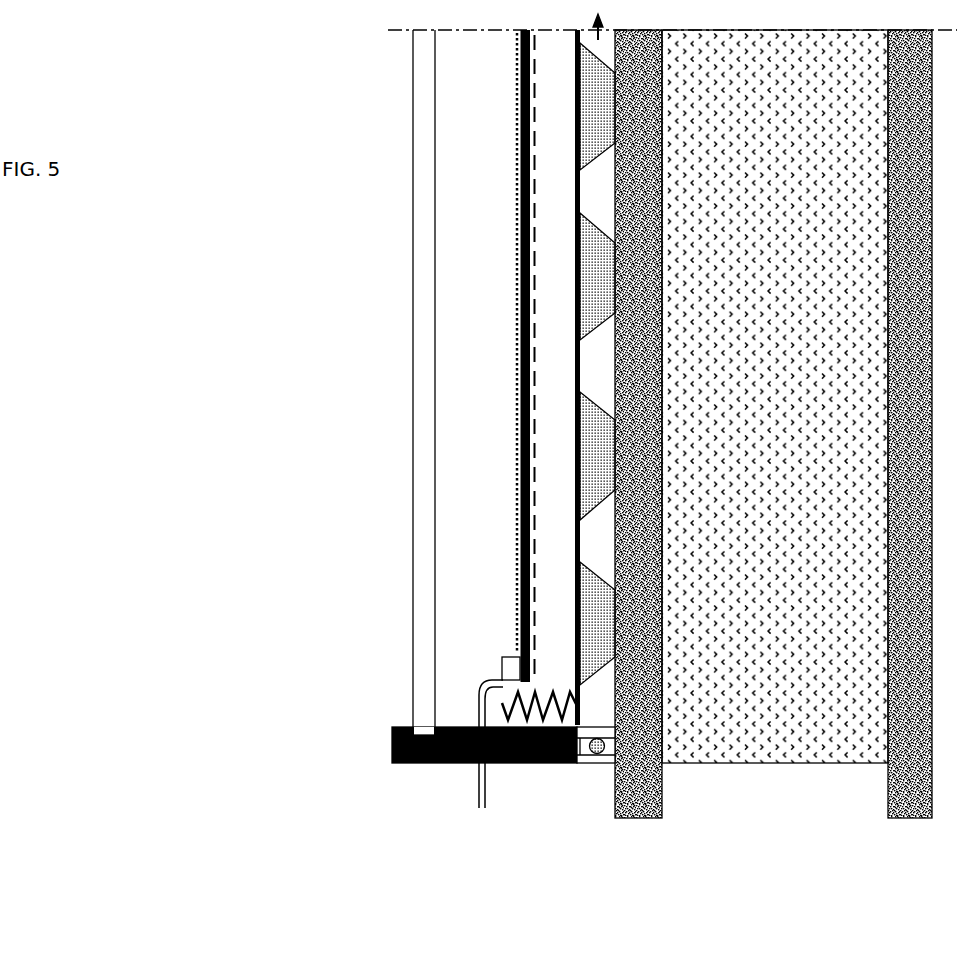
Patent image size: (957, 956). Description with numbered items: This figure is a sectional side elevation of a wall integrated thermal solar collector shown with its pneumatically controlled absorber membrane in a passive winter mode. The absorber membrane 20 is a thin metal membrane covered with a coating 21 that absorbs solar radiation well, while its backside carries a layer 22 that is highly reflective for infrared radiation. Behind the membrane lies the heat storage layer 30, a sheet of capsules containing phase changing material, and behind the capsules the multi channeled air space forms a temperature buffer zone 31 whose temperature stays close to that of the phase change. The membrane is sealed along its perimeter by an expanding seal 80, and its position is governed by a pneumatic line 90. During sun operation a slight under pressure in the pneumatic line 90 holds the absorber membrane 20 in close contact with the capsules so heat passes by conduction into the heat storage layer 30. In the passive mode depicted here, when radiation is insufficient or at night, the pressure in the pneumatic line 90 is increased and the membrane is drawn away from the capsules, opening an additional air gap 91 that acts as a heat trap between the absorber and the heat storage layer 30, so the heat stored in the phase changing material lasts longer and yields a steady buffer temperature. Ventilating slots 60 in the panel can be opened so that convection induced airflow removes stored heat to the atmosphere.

The absorber membrane 20 is at (513, 115).
The coating 21 is at (513, 173).
The layer 22 is at (513, 268).
The heat storage layer 30 is at (600, 452).
The temperature buffer zone 31 is at (612, 555).
The ventilating slots 60 is at (580, 762).
The expanding seal 80 is at (502, 707).
The pneumatic line 90 is at (473, 780).
The air gap 91 is at (550, 635).